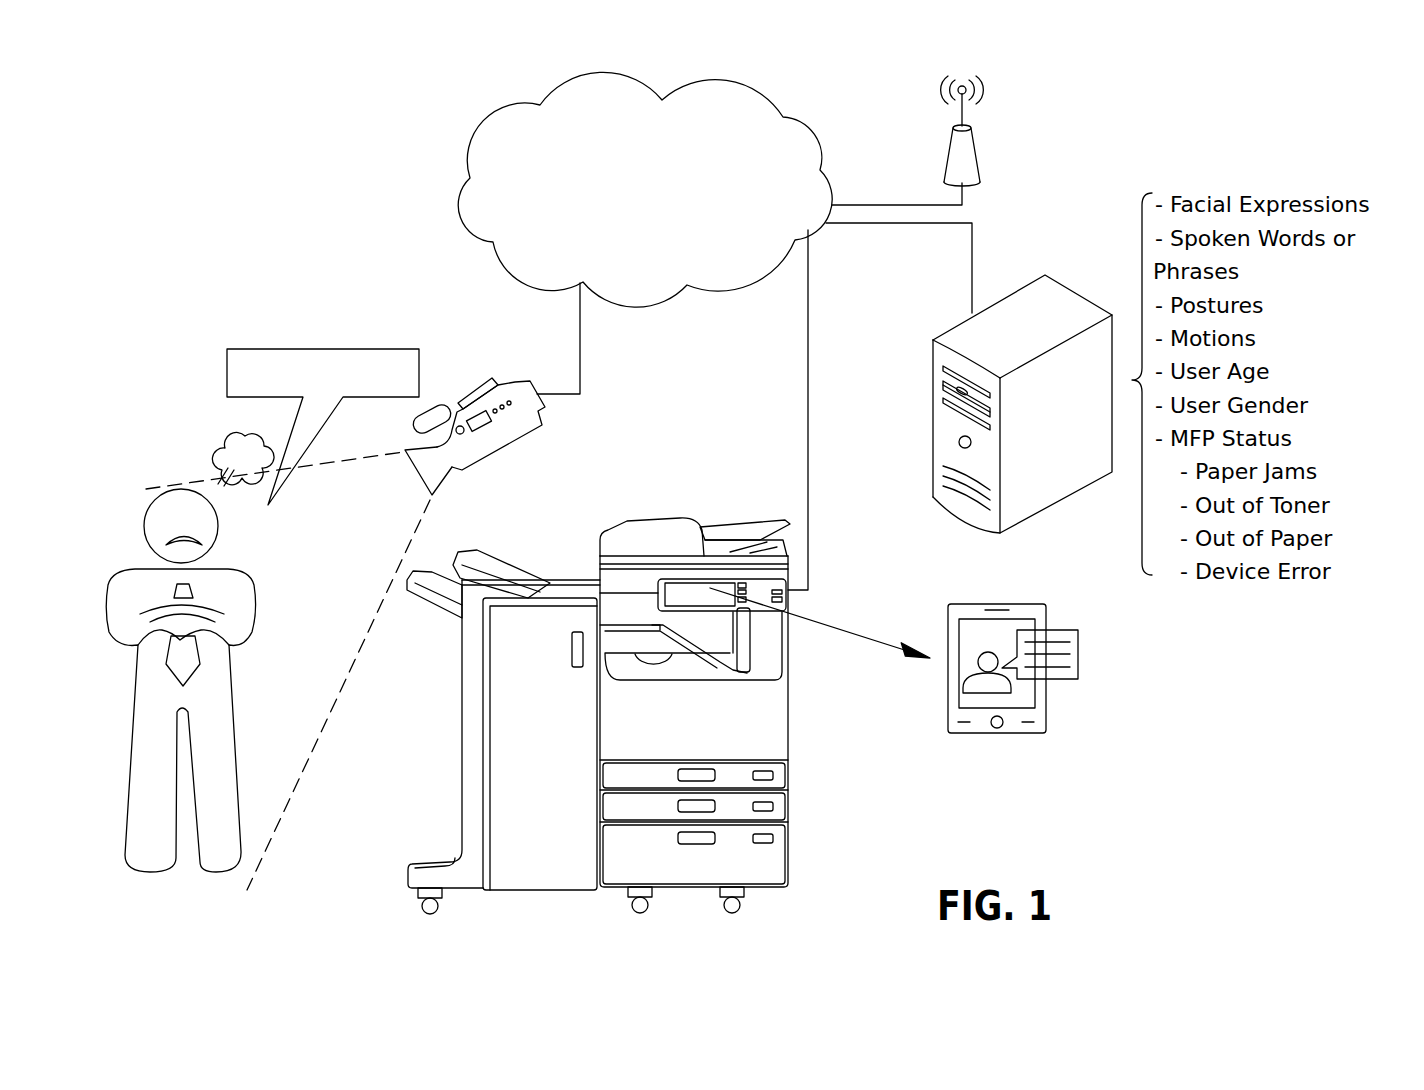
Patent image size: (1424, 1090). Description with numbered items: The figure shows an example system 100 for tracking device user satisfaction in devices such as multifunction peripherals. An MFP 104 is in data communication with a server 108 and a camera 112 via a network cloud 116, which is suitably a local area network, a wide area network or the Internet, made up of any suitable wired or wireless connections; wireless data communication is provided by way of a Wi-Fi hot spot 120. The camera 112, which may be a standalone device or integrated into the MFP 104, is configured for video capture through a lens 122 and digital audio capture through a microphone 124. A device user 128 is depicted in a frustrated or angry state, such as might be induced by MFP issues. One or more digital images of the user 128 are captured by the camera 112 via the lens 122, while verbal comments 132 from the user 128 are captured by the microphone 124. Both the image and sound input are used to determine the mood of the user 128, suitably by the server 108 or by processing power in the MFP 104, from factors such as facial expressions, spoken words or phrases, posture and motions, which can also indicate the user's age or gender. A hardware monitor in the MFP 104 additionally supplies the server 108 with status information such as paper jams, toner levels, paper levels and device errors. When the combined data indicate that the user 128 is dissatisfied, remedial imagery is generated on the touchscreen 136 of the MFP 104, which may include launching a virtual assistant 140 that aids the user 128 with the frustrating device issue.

The system 100 is at (1177, 117).
The MFP 104 is at (575, 890).
The server 108 is at (1043, 512).
The camera 112 is at (520, 443).
The network cloud 116 is at (807, 122).
The Wi-Fi hot spot 120 is at (977, 151).
The lens 122 is at (440, 483).
The microphone 124 is at (440, 408).
The device user 128 is at (229, 703).
The verbal comments 132 is at (335, 349).
The touchscreen 136 is at (700, 585).
The virtual assistant 140 is at (1047, 715).